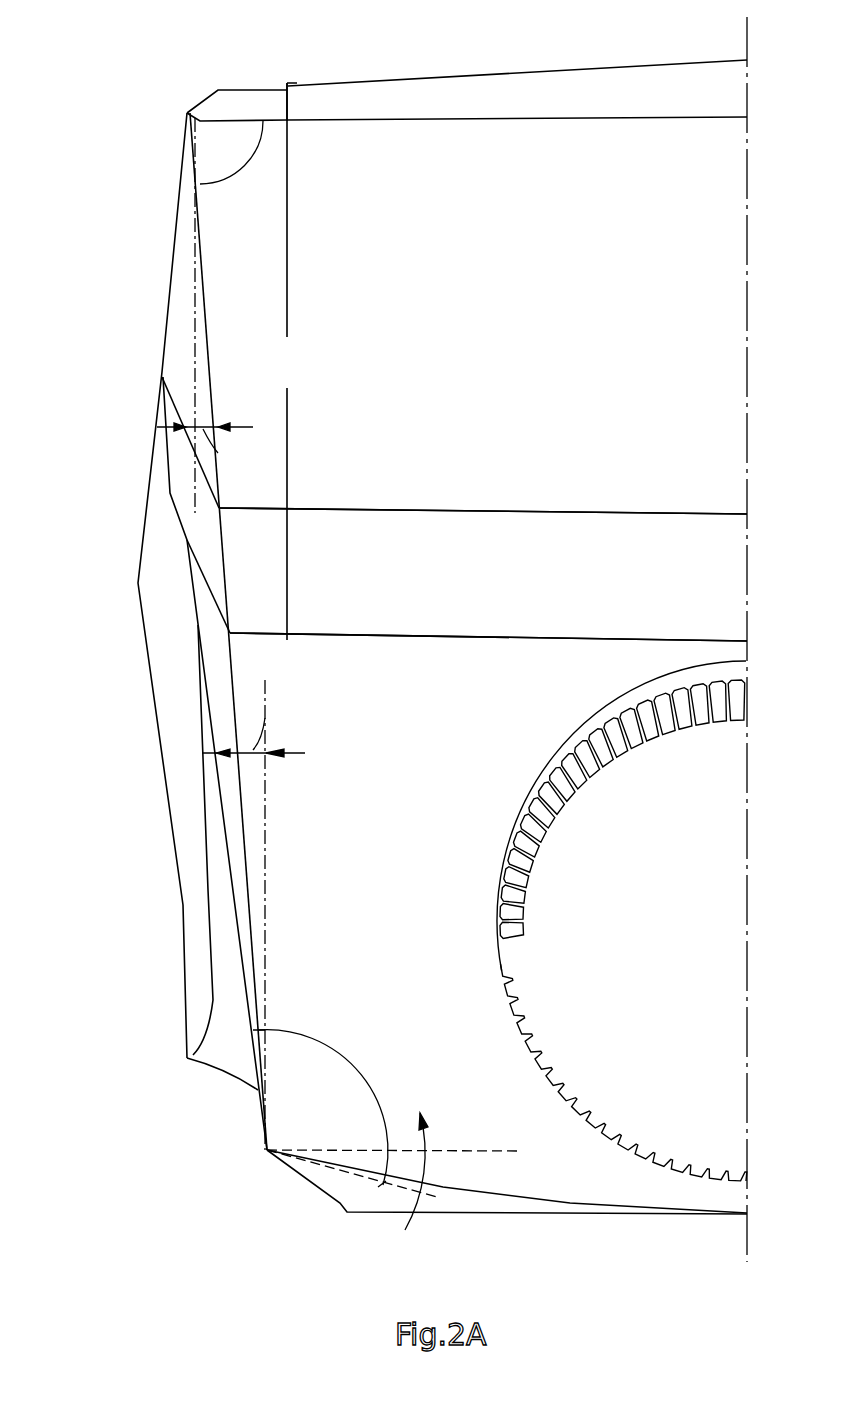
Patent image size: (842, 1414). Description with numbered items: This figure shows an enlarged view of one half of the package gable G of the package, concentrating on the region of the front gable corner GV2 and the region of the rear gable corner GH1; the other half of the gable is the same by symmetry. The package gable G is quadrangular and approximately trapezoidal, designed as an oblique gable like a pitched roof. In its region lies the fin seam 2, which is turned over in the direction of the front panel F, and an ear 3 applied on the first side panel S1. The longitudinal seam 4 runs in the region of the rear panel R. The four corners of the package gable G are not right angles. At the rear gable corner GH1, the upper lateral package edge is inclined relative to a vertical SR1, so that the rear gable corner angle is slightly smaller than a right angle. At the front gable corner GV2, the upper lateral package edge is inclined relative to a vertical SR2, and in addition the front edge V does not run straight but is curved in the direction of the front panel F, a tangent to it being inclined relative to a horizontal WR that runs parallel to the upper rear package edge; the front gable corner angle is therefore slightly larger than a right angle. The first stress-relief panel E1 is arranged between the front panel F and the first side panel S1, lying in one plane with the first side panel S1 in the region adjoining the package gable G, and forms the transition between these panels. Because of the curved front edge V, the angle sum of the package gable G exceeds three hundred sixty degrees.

The rear gable corner GH1 is at (185, 112).
The longitudinal seam 4 is at (297, 100).
The rear panel R is at (565, 55).
The package gable G is at (551, 342).
The ear 3 is at (180, 350).
The vertical SR1 is at (195, 375).
The fin seam 2 is at (707, 572).
The first side panel S1 is at (173, 682).
The vertical SR2 is at (267, 843).
The horizontal WR is at (480, 1150).
The first stress-relief panel E1 is at (230, 1038).
The front gable corner GV2 is at (265, 1152).
The front panel F is at (373, 1197).
The front edge V is at (498, 1193).